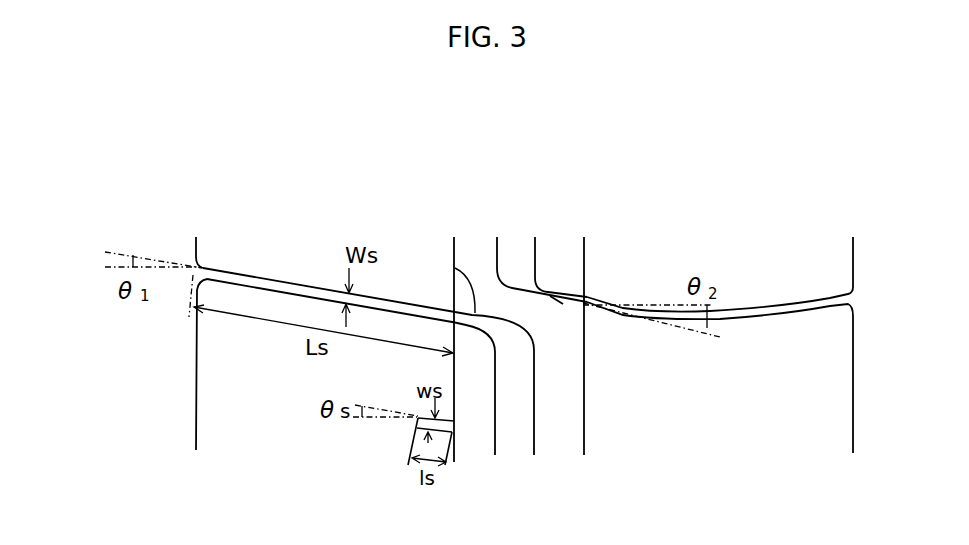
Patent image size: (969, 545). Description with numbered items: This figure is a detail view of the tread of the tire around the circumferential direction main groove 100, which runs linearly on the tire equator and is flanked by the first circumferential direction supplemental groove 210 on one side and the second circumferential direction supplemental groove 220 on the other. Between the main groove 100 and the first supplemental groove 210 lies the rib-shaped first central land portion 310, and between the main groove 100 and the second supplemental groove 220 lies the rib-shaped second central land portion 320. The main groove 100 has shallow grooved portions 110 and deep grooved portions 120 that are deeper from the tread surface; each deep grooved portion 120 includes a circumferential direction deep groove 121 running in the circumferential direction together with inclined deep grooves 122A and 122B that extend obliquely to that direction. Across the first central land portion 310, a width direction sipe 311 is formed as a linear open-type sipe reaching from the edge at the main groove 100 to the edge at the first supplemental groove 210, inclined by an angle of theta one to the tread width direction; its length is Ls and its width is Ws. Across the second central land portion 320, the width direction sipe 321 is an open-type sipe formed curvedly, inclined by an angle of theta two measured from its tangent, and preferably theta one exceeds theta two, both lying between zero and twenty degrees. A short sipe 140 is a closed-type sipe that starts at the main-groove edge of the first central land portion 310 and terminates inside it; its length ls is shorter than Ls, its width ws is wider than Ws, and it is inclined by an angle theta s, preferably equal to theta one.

The circumferential direction main groove 100 is at (564, 217).
The shallow grooved portion 110 is at (572, 422).
The deep grooved portion 120 is at (517, 455).
The circumferential direction deep groove 121 is at (512, 247).
The inclined deep groove 122A is at (453, 270).
The inclined deep groove 122B is at (563, 305).
The short sipe 140 is at (412, 424).
The first circumferential direction supplemental groove 210 is at (163, 435).
The second circumferential direction supplemental groove 220 is at (863, 438).
The first central land portion 310 is at (270, 433).
The width direction sipe 311 is at (276, 279).
The second central land portion 320 is at (723, 437).
The width direction sipe 321 is at (742, 310).